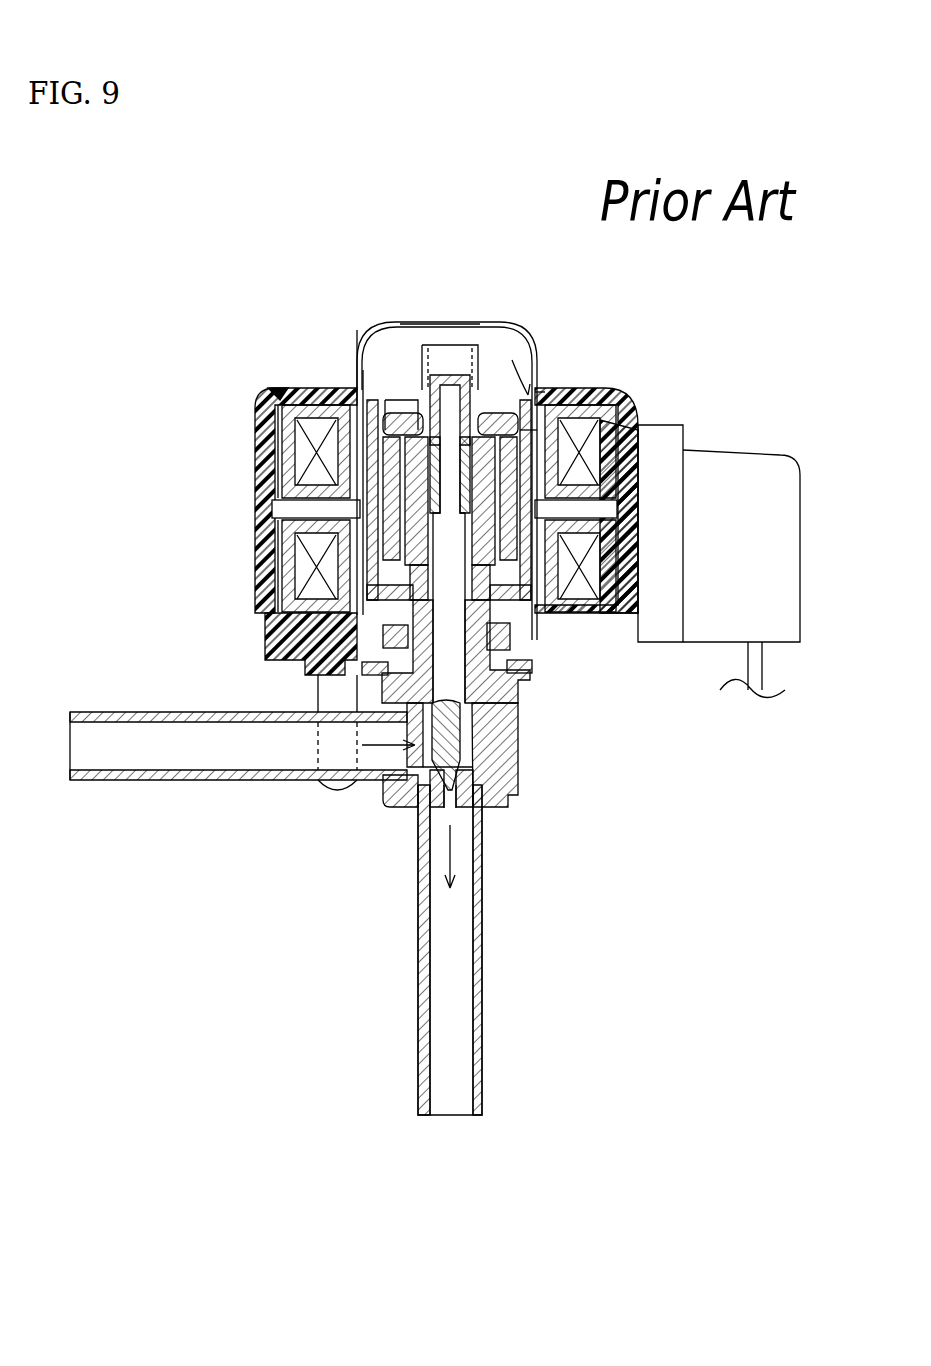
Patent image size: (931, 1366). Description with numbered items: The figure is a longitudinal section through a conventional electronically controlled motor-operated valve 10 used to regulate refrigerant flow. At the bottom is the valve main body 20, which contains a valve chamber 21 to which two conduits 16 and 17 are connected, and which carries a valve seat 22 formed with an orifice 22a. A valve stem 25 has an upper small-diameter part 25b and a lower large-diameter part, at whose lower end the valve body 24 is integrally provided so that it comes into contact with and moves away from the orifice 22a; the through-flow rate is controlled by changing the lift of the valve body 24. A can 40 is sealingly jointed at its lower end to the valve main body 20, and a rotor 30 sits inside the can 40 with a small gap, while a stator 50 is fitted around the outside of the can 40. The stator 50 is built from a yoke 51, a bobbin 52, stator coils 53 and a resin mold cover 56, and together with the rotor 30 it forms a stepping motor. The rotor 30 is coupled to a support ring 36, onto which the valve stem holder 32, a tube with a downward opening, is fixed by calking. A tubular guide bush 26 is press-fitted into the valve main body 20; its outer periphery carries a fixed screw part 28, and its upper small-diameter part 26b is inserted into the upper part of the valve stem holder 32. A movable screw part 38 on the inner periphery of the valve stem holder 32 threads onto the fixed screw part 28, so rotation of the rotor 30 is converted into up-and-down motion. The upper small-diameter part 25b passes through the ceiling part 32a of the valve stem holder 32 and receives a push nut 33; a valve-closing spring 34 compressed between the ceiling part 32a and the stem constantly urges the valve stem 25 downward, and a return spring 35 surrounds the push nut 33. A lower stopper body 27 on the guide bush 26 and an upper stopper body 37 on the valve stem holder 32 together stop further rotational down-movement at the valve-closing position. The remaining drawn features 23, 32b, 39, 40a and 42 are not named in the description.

The motor-operated valve 10 is at (257, 290).
The conduit 16 is at (292, 782).
The conduit 17 is at (418, 900).
The valve main body 20 is at (495, 810).
The valve chamber 21 is at (380, 798).
The valve seat 22 is at (475, 768).
The orifice 22a is at (440, 810).
The valve housing 23 is at (275, 658).
The valve body 24 is at (500, 808).
The valve stem 25 is at (610, 530).
The upper small-diameter part 25b is at (560, 435).
The guide bush 26 is at (528, 670).
The upper small-diameter part 26b is at (314, 480).
The lower stopper body 27 is at (540, 640).
The fixed screw part 28 is at (316, 582).
The rotor 30 is at (545, 400).
The valve stem holder 32 is at (470, 520).
The ceiling part 32a is at (478, 415).
The stopper 32b is at (420, 400).
The push nut 33 is at (480, 370).
The valve-closing spring 34 is at (306, 428).
The return spring 35 is at (466, 372).
The support ring 36 is at (358, 395).
The upper stopper body 37 is at (520, 603).
The movable screw part 38 is at (334, 556).
The flange 39 is at (412, 420).
The can 40 is at (540, 355).
The top wall 40a is at (432, 322).
The inlet passage 42 is at (360, 703).
The stator 50 is at (640, 412).
The yoke 51 is at (285, 392).
The bobbin 52 is at (290, 503).
The stator coil 53 is at (300, 438).
The resin mold cover 56 is at (260, 412).